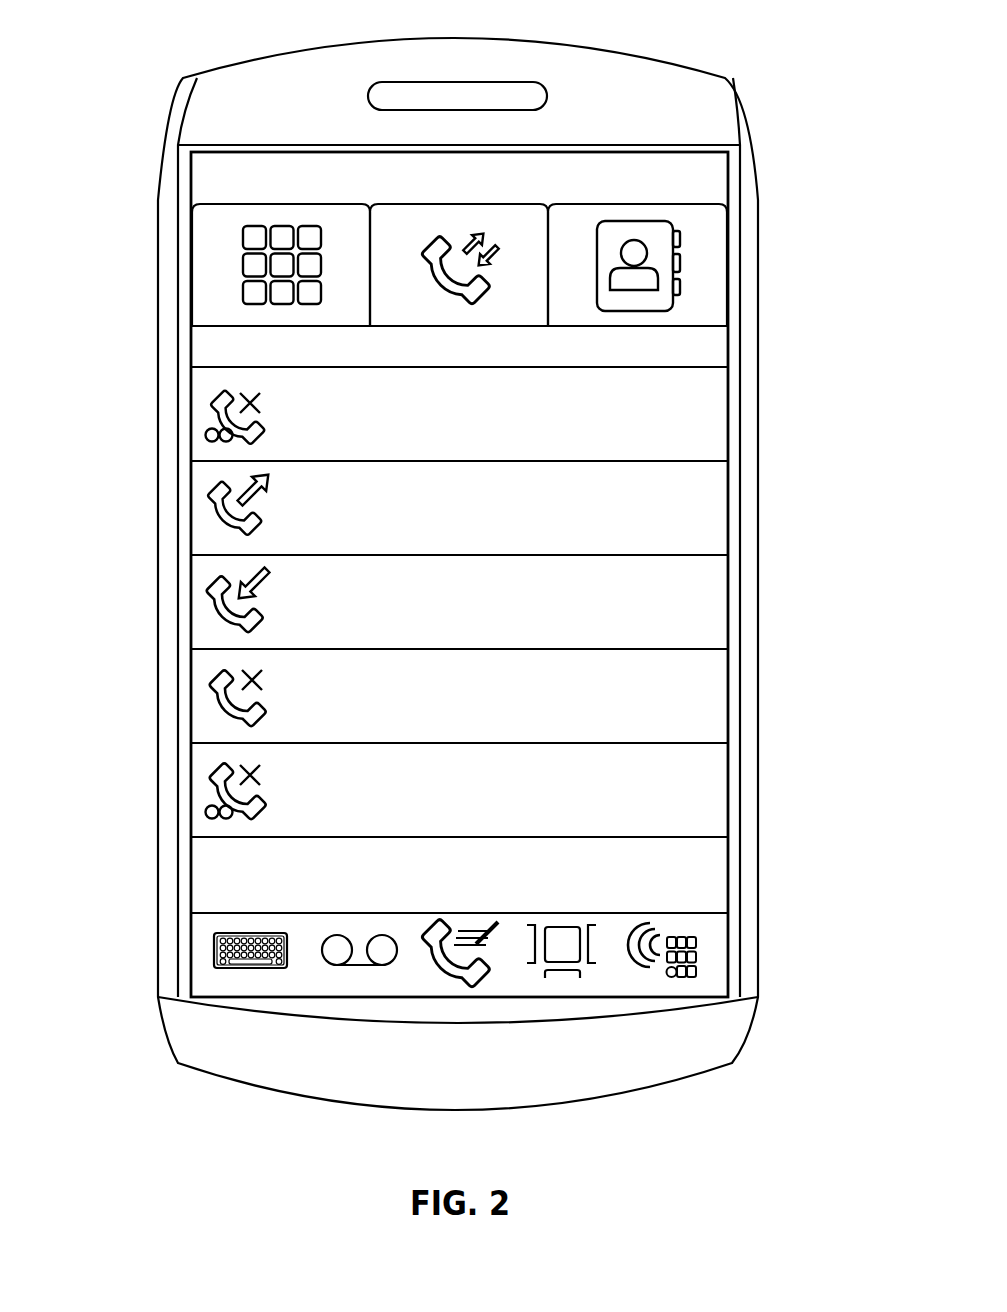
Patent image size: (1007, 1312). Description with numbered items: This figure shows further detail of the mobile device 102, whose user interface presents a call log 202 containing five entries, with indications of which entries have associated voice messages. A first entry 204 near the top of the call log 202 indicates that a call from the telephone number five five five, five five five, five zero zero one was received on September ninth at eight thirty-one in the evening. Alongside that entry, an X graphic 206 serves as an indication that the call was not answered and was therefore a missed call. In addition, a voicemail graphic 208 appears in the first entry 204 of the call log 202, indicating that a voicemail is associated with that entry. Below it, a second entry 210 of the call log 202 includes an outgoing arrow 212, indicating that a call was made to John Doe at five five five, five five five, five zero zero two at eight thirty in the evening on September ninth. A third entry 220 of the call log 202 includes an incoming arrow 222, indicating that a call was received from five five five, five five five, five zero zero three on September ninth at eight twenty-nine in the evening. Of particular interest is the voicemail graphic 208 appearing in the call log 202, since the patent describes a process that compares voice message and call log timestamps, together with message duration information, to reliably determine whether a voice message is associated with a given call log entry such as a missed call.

The mobile device 102 is at (398, 557).
The call log 202 is at (192, 362).
The first entry 204 is at (397, 401).
The X graphic 206 is at (256, 399).
The voicemail graphic 208 is at (205, 433).
The second entry 210 is at (416, 501).
The outgoing arrow 212 is at (268, 487).
The third entry 220 is at (416, 600).
The incoming arrow 222 is at (262, 590).